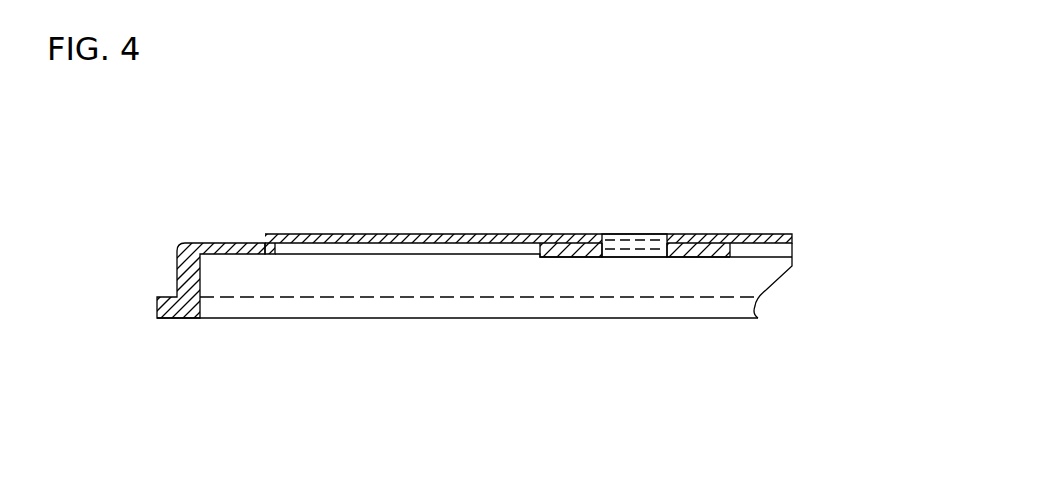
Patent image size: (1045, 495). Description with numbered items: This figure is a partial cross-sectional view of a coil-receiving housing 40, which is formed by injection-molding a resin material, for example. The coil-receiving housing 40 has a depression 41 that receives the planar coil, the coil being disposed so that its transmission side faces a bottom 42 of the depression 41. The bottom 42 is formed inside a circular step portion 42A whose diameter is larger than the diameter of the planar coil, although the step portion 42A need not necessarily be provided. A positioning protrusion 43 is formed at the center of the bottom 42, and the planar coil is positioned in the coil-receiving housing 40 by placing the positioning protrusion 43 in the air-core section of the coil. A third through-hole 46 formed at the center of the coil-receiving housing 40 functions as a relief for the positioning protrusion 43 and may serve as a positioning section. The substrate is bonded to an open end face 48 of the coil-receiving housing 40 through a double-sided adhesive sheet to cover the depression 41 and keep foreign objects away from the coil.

The coil-receiving housing 40 is at (690, 197).
The depression 41 is at (548, 272).
The bottom 42 is at (413, 243).
The step portion 42A is at (277, 250).
The positioning protrusion 43 is at (582, 258).
The third through-hole 46 is at (653, 234).
The open end face 48 is at (175, 320).